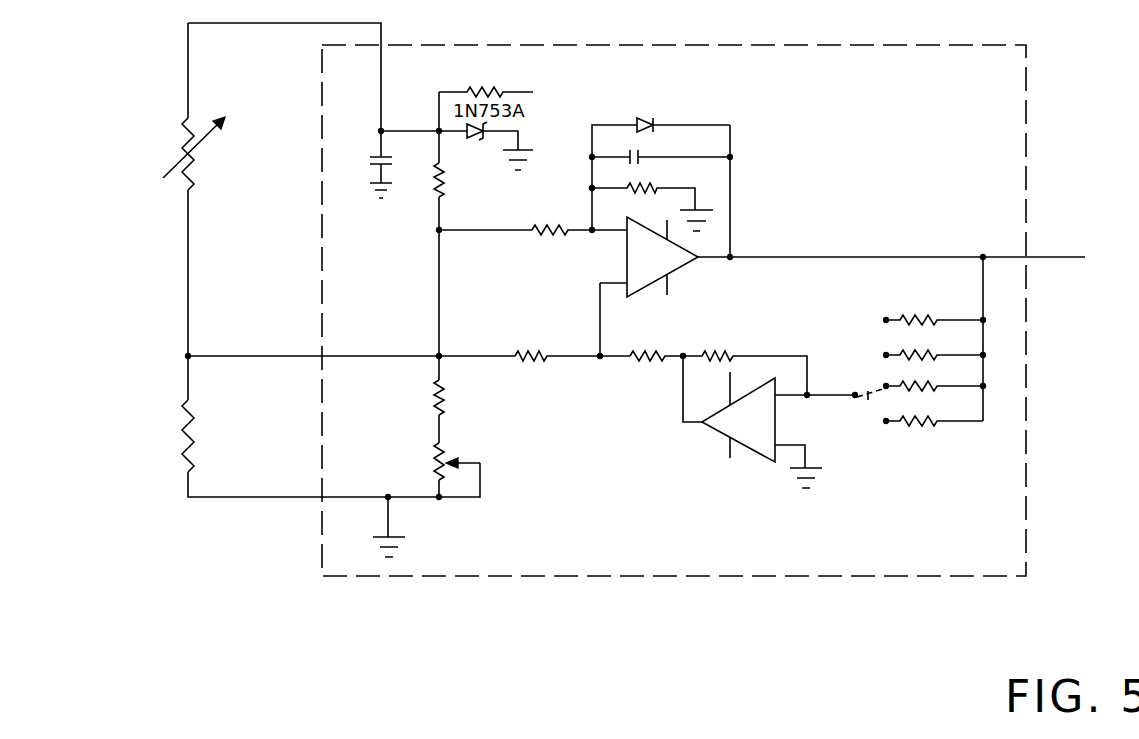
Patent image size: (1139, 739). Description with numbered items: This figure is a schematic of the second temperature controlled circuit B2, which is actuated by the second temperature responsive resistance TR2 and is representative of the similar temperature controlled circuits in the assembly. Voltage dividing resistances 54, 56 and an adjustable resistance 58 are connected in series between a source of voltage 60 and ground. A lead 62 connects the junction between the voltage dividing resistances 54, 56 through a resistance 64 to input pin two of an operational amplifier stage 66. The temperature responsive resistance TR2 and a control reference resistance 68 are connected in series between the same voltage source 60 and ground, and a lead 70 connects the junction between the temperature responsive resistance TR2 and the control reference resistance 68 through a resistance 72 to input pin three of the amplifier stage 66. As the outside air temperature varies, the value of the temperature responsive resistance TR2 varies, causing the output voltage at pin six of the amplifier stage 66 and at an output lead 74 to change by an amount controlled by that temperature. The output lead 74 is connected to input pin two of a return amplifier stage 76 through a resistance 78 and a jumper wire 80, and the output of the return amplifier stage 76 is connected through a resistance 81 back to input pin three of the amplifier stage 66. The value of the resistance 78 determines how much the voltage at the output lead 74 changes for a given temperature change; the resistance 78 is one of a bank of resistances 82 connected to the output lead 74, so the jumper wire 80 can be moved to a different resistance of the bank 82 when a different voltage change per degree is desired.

The second temperature responsive resistance TR2 is at (175, 137).
The second temperature controlled circuit B2 is at (737, 578).
The voltage dividing resistance 54 is at (443, 190).
The voltage dividing resistance 56 is at (443, 404).
The adjustable resistance 58 is at (437, 462).
The source of voltage 60 is at (439, 92).
The lead 62 is at (468, 232).
The resistance 64 is at (553, 227).
The operational amplifier stage 66 is at (629, 298).
The control reference resistance 68 is at (183, 420).
The lead 70 is at (357, 356).
The resistance 72 is at (535, 360).
The output lead 74 is at (1033, 257).
The return amplifier stage 76 is at (777, 421).
The resistance 78 is at (922, 388).
The jumper wire 80 is at (870, 398).
The resistance 81 is at (635, 360).
The bank of resistances 82 is at (1017, 369).